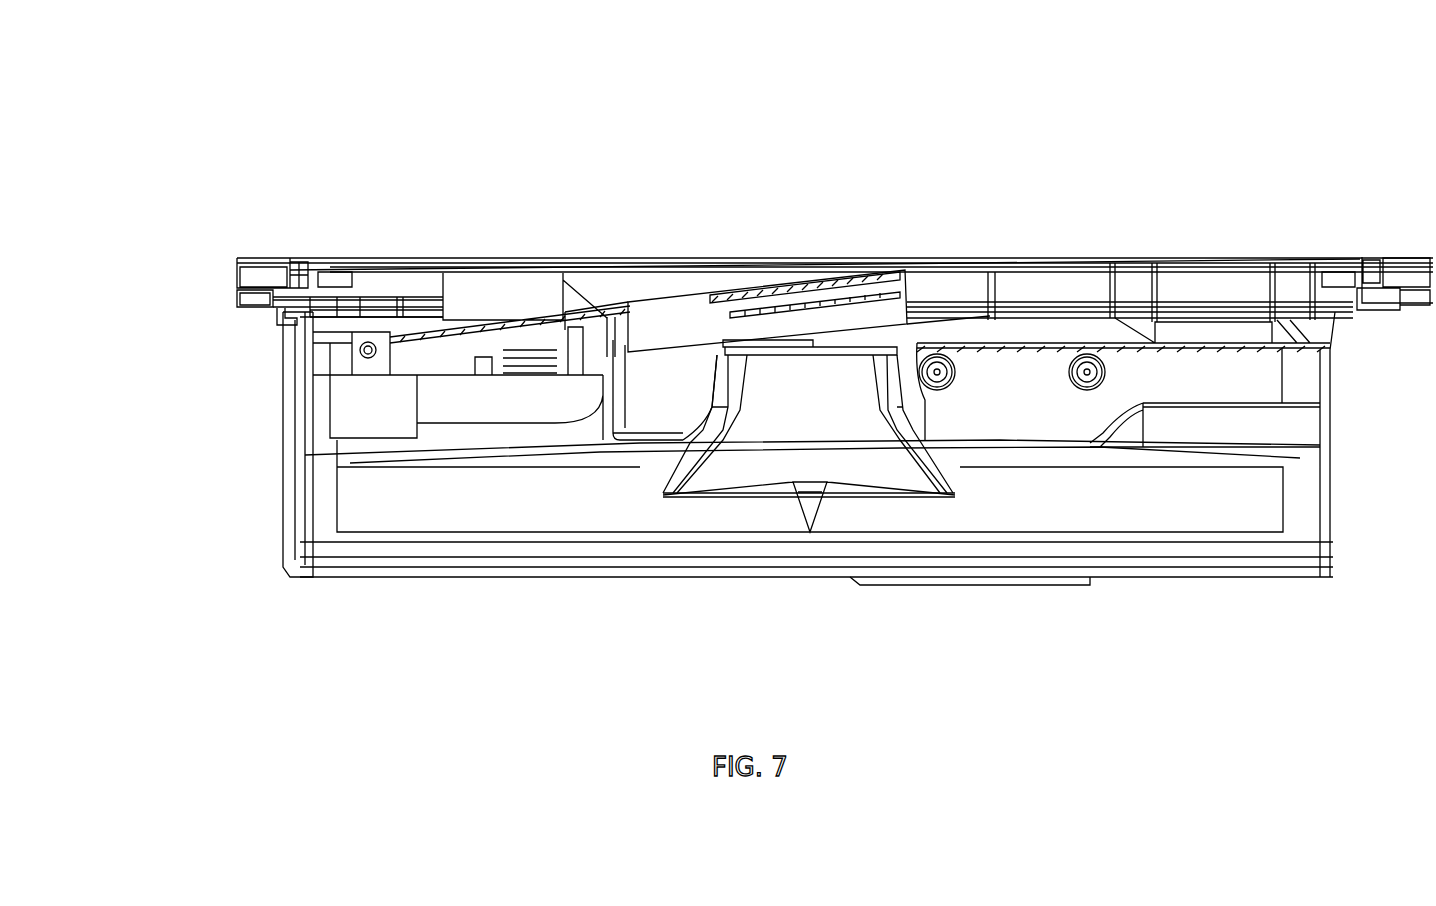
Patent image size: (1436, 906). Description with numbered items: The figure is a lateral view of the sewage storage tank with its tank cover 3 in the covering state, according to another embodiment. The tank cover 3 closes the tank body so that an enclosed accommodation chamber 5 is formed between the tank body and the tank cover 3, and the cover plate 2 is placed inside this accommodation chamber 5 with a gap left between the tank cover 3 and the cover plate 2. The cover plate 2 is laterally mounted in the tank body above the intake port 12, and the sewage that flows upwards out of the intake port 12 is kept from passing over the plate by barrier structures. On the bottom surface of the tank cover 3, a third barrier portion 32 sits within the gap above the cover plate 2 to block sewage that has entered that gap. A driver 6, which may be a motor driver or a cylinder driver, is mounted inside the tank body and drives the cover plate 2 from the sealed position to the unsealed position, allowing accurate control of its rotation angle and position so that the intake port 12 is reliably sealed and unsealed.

The cover plate 2 is at (746, 283).
The tank cover 3 is at (1060, 255).
The third barrier portion 32 is at (505, 300).
The accommodation chamber 5 is at (669, 393).
The driver 6 is at (358, 403).
The intake port 12 is at (800, 360).